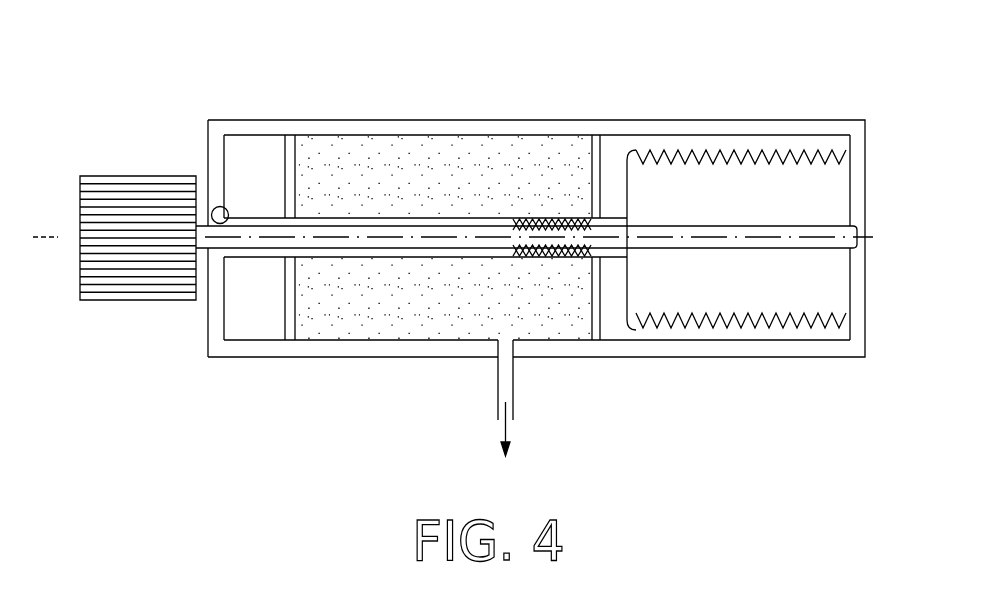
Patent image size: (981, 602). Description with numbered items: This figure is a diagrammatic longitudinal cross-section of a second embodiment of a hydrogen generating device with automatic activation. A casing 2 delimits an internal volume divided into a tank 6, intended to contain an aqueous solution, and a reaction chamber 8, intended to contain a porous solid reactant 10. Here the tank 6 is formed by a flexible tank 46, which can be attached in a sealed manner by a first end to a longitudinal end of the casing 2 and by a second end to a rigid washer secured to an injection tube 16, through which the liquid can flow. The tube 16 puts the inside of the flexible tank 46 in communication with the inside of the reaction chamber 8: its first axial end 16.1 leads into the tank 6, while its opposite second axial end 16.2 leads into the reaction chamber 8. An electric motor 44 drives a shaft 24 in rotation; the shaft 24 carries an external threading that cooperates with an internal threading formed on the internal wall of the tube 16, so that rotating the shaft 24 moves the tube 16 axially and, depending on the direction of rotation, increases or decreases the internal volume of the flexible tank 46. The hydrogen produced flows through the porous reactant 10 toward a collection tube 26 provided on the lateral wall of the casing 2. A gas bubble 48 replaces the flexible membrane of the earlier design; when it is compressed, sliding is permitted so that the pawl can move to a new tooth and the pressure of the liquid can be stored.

The casing 2 is at (377, 119).
The tank 6 is at (780, 297).
The reaction chamber 8 is at (253, 162).
The solid reactant 10 is at (457, 157).
The injection tube 16 is at (410, 258).
The first axial end 16.1 is at (625, 262).
The second axial end 16.2 is at (238, 258).
The shaft 24 is at (678, 222).
The collection tube 26 is at (498, 398).
The electric motor 44 is at (140, 176).
The flexible tank 46 is at (646, 152).
The gas bubble 48 is at (626, 180).